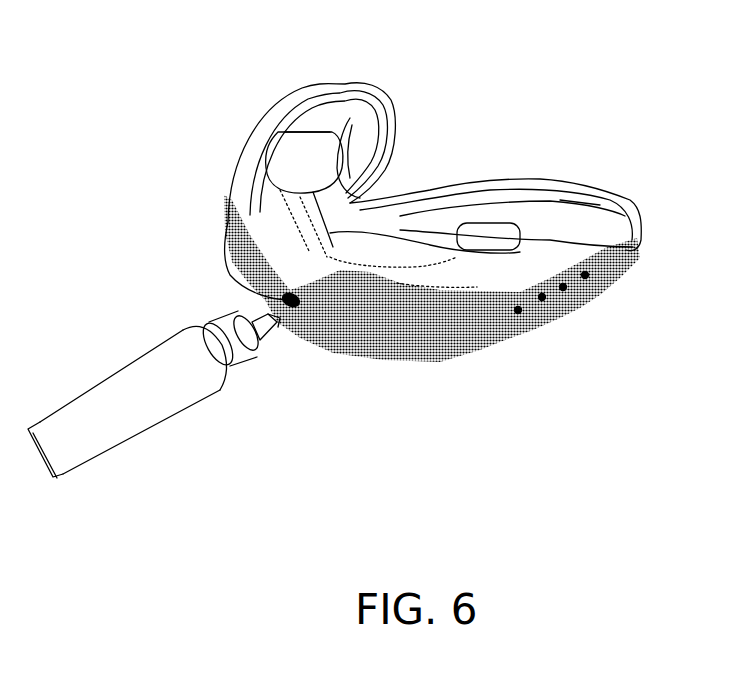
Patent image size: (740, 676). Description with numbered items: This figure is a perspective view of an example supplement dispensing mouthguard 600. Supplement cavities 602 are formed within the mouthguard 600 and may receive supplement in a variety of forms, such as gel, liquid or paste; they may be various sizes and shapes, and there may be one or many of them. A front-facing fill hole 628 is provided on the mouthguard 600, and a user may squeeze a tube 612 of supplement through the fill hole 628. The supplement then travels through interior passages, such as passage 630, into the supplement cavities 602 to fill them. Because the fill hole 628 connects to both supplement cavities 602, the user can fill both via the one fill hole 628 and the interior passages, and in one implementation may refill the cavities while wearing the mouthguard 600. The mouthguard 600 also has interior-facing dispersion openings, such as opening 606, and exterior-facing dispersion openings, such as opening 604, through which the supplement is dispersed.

The supplement dispensing mouthguard 600 is at (160, 125).
The supplement cavities 602 is at (317, 127).
The exterior-facing dispersion opening 604 is at (563, 287).
The interior-facing dispersion opening 606 is at (378, 148).
The tube 612 is at (120, 430).
The fill hole 628 is at (288, 299).
The interior passage 630 is at (413, 290).